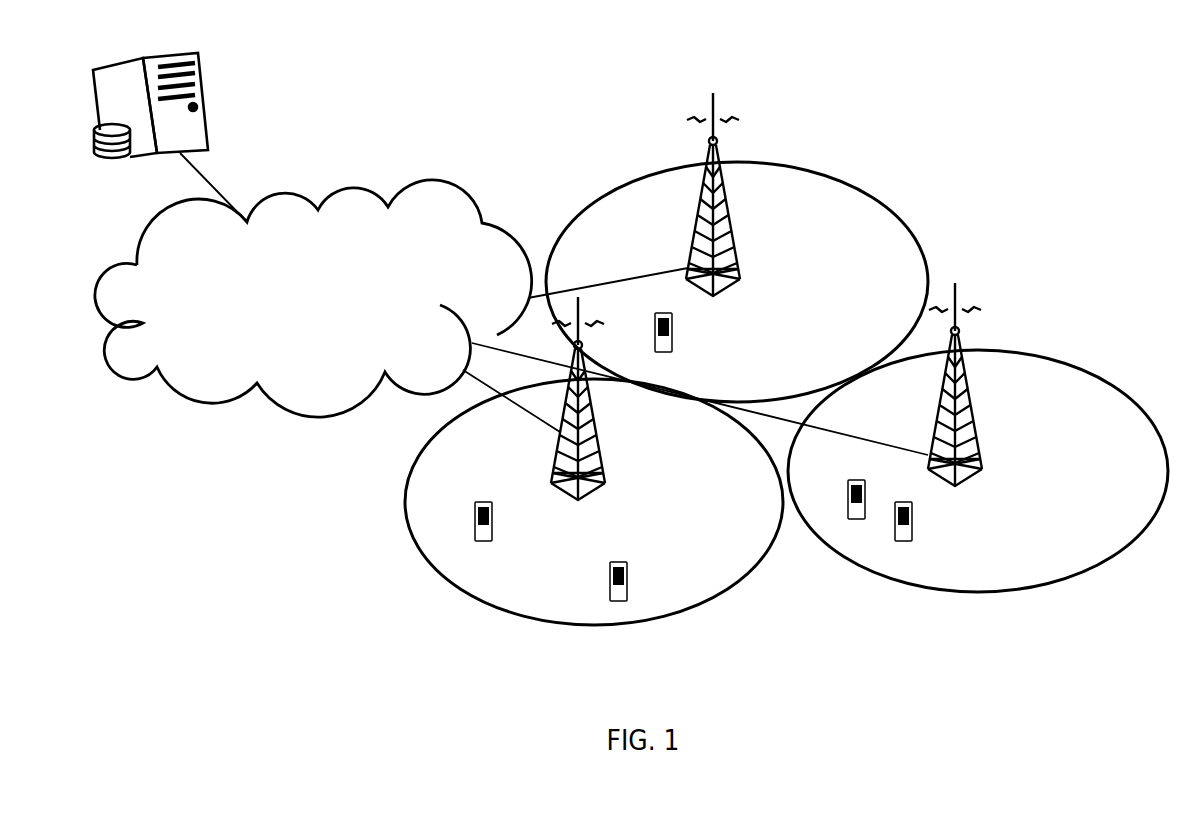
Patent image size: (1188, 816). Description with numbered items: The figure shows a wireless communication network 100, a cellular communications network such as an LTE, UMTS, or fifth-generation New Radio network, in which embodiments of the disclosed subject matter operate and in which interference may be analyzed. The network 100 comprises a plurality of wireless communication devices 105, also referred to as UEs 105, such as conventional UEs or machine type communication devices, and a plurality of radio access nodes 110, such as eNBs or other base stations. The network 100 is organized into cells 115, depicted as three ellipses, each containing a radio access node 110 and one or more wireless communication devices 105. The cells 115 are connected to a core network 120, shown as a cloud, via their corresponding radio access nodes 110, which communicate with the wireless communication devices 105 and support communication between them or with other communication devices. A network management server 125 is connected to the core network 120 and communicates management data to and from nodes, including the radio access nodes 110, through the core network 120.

The wireless communication network 100 is at (989, 158).
The wireless communication device 105 is at (721, 457).
The radio access node 110 is at (792, 296).
The cell 115 is at (786, 389).
The core network 120 is at (511, 317).
The network management server 125 is at (170, 122).